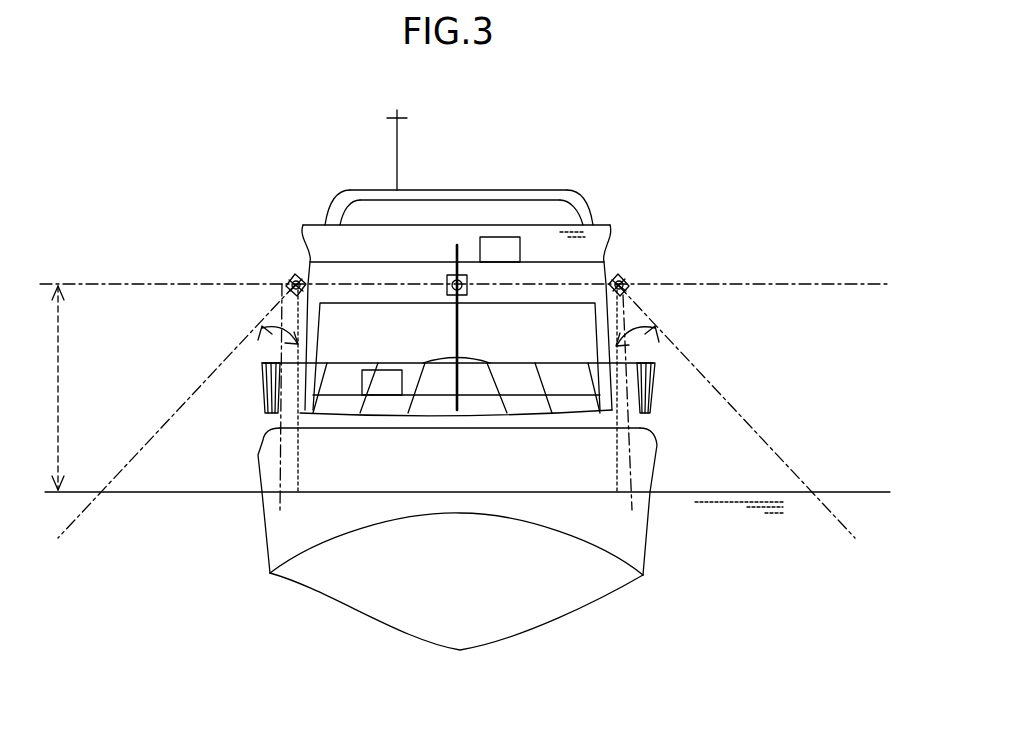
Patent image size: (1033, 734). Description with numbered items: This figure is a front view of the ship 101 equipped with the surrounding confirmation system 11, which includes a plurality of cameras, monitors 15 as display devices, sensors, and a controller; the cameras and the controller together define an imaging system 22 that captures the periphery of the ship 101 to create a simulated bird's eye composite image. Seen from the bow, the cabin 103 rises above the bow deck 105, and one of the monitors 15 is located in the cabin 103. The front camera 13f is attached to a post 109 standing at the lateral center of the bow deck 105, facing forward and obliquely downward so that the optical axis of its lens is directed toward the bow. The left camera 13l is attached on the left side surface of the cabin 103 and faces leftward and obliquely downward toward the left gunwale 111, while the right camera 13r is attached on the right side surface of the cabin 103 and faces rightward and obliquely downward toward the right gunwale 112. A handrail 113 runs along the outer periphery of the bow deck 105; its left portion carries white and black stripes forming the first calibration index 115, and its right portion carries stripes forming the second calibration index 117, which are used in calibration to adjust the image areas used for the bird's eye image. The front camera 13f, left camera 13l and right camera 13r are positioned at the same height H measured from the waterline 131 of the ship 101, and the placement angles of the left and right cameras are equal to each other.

The ship 101 is at (468, 185).
The cabin 103 is at (537, 275).
The bow deck 105 is at (480, 403).
The post 109 is at (462, 340).
The handrail 113 is at (357, 362).
The monitor 15 is at (503, 247).
The imaging system 22 is at (636, 246).
The front camera 13f is at (440, 283).
The right camera 13r is at (290, 280).
The left camera 13l is at (628, 280).
The surrounding confirmation system 11 is at (676, 320).
The left gunwale 111 is at (657, 416).
The right gunwale 112 is at (260, 416).
The first calibration index 115 is at (631, 501).
The second calibration index 117 is at (283, 500).
The waterline 131 is at (153, 493).
The height H is at (72, 388).